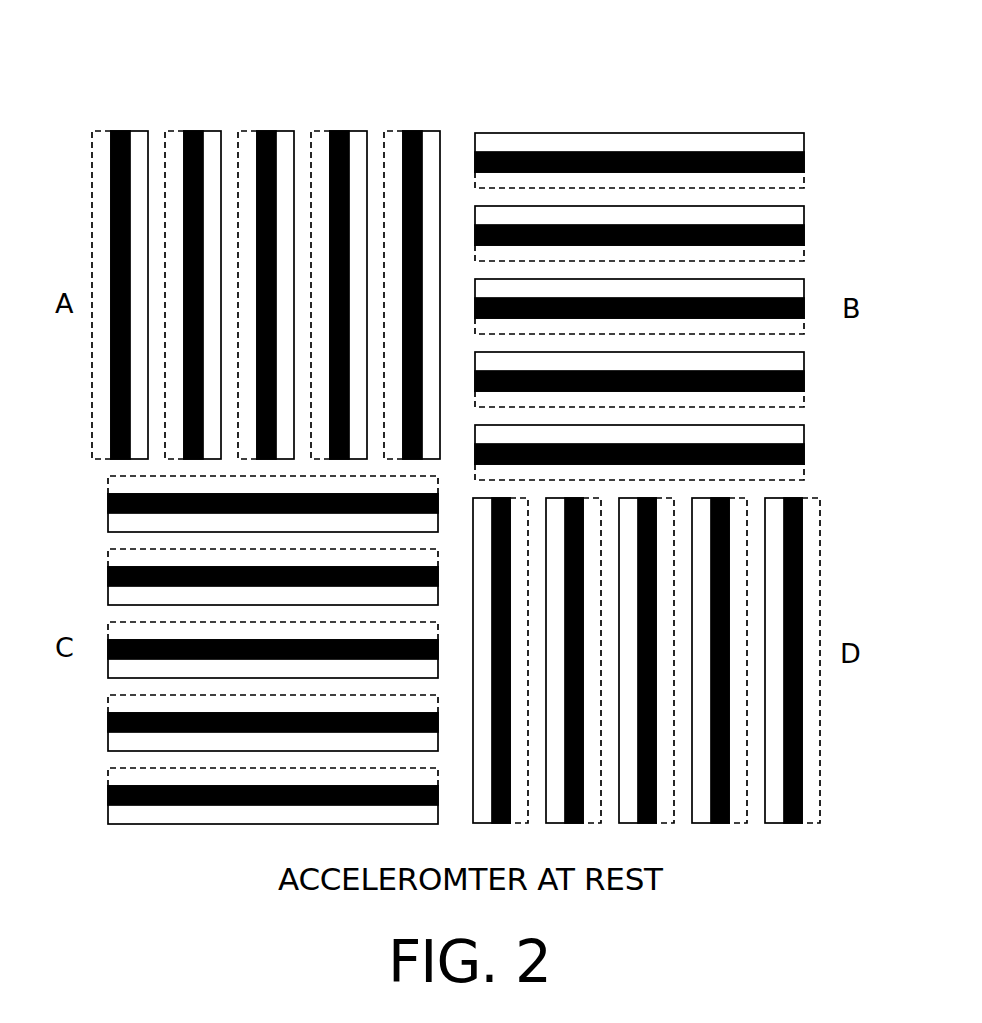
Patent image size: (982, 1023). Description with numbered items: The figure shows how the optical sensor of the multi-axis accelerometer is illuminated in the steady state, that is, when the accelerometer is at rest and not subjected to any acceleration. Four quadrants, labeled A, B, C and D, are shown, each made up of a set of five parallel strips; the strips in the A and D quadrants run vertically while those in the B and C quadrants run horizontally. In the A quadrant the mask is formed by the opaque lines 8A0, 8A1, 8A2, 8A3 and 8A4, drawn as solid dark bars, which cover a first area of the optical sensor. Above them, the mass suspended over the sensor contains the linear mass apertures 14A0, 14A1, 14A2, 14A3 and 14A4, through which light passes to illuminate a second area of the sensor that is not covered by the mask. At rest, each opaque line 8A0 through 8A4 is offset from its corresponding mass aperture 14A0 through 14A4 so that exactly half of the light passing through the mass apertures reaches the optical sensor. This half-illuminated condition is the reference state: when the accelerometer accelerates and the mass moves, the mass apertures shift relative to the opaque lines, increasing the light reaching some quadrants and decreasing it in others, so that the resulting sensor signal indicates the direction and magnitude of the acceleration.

The linear mass aperture 14A0 is at (148, 131).
The linear mass aperture 14A1 is at (221, 131).
The linear mass aperture 14A2 is at (294, 131).
The linear mass aperture 14A3 is at (367, 131).
The linear mass aperture 14A4 is at (440, 131).
The opaque line 8A0 is at (130, 131).
The opaque line 8A1 is at (203, 131).
The opaque line 8A2 is at (276, 131).
The opaque line 8A3 is at (349, 131).
The opaque line 8A4 is at (422, 131).